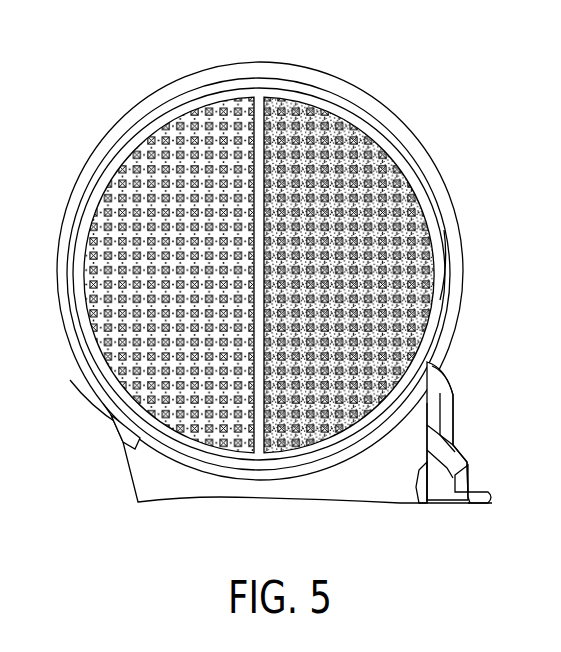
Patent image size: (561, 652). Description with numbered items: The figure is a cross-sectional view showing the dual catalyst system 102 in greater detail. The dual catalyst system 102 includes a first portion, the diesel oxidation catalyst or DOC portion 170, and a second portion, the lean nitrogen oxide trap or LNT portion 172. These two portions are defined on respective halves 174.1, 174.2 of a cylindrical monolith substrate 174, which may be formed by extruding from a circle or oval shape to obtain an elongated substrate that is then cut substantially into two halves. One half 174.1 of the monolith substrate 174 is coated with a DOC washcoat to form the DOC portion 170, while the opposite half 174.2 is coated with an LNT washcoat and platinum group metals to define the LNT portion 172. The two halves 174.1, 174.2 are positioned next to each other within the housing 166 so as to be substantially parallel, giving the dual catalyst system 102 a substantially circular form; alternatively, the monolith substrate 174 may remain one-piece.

The dual catalyst system 102 is at (393, 81).
The housing 166 is at (423, 144).
The diesel oxidation catalyst (DOC) portion 170 is at (120, 297).
The lean nitrogen oxide trap (LNT) portion 172 is at (423, 227).
The monolith substrate 174 is at (274, 66).
The first half of the monolith substrate 174.1 is at (113, 376).
The second half of the monolith substrate 174.2 is at (437, 263).